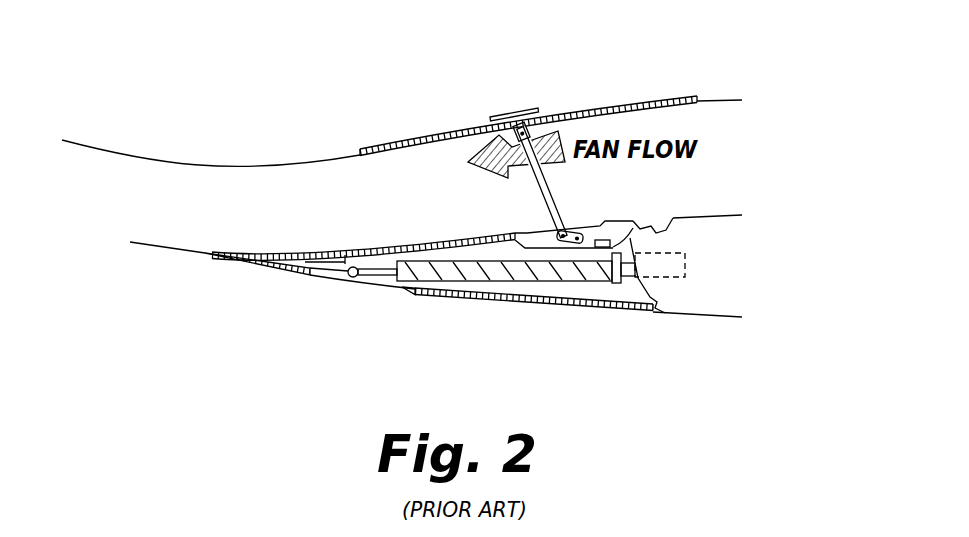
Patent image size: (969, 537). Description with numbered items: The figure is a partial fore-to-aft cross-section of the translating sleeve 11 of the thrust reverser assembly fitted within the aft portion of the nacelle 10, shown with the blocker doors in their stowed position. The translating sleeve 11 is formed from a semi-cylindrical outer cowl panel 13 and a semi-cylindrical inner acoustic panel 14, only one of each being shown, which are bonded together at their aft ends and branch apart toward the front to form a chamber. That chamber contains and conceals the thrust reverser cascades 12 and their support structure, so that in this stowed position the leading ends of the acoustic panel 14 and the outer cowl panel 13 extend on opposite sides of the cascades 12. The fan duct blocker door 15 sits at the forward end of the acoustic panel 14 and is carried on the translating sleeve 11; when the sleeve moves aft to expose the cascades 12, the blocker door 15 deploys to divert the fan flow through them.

The nacelle 10 is at (785, 57).
The translating sleeve 11 is at (377, 287).
The thrust reverser cascades 12 is at (560, 285).
The outer cowl panel 13 is at (507, 305).
The inner acoustic panel 14 is at (333, 252).
The thrust reverser blocker door 15 is at (602, 222).